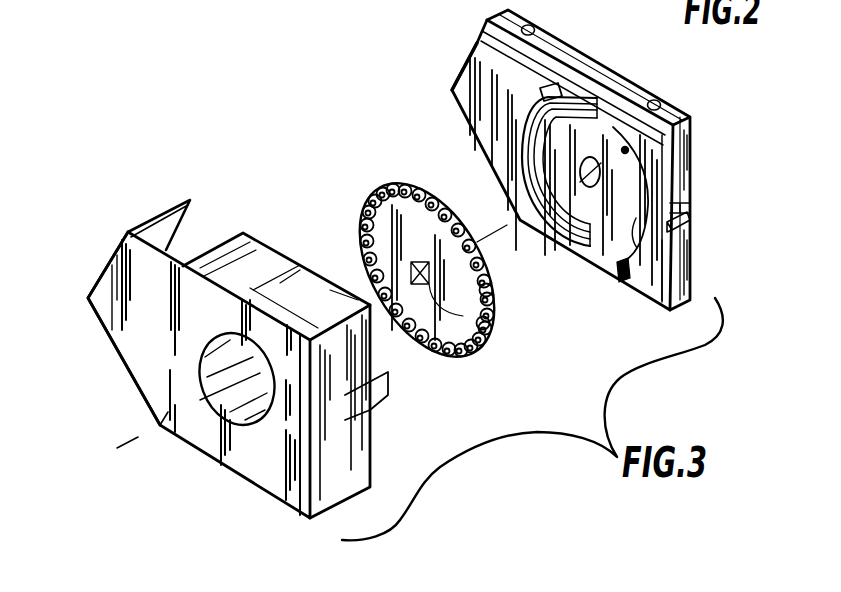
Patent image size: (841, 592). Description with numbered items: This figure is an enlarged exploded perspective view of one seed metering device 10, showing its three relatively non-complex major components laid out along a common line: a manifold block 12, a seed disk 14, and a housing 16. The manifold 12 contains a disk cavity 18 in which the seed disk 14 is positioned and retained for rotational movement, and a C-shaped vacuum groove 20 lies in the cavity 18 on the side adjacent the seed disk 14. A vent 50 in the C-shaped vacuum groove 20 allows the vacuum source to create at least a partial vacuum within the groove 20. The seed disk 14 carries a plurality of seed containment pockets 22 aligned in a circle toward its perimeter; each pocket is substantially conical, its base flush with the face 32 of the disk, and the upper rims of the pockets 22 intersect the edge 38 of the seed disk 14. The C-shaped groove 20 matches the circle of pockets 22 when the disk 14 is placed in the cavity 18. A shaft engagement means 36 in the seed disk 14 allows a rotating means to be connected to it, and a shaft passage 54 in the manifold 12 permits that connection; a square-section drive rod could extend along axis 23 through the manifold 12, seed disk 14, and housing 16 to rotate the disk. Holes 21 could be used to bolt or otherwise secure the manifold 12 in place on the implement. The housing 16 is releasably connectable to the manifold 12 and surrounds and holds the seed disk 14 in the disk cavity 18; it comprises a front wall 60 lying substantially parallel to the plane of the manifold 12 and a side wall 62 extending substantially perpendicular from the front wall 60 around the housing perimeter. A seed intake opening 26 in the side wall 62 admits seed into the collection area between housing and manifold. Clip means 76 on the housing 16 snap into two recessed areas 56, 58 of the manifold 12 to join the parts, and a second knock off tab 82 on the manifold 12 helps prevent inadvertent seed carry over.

The seed metering device 10 is at (285, 145).
The manifold block 12 is at (692, 150).
The seed disk 14 is at (392, 182).
The housing 16 is at (117, 212).
The disk cavity 18 is at (662, 258).
The C-shaped vacuum groove 20 is at (543, 193).
The bolt holes 21 is at (533, 27).
The seed containment pockets 22 is at (373, 206).
The axis 23 is at (155, 425).
The seed intake opening 26 is at (195, 240).
The face of the seed disk 32 is at (395, 255).
The shaft engagement means 36 is at (488, 326).
The edge of the seed disk 38 is at (490, 292).
The vent 50 is at (543, 172).
The shaft passage 54 is at (600, 190).
The recessed area 56 is at (690, 205).
The recessed area 58 is at (473, 55).
The front wall 60 is at (143, 288).
The side wall 62 is at (353, 435).
The clip means 76 is at (382, 383).
The second knock off tab 82 is at (560, 86).